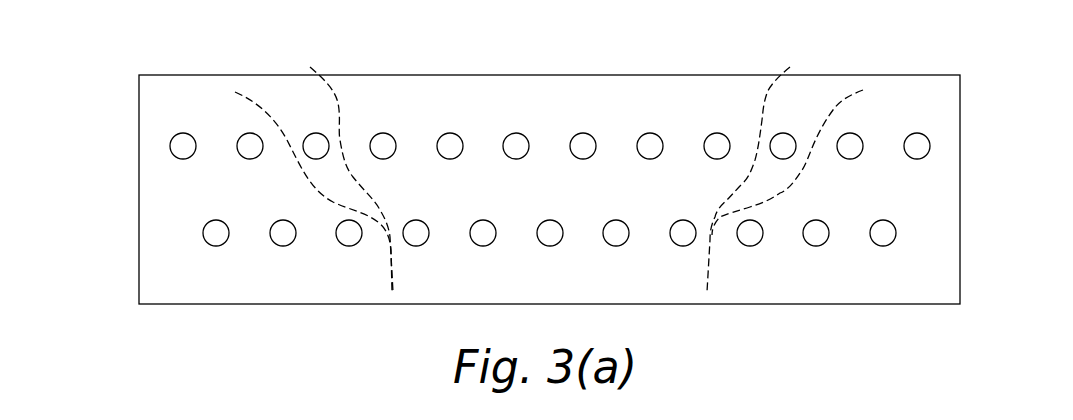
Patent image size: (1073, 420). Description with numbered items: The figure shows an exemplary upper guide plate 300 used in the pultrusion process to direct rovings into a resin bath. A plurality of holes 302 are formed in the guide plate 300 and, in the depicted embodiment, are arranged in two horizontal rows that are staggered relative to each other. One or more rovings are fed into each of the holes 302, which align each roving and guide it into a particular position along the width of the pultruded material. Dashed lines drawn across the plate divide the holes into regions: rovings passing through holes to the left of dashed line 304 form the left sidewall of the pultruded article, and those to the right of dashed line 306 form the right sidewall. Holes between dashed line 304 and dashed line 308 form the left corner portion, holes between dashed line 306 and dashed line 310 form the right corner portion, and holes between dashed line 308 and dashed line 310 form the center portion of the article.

The upper guide plate 300 is at (964, 73).
The holes 302 is at (207, 223).
The dashed line 304 is at (243, 92).
The dashed line 306 is at (856, 92).
The dashed line 308 is at (337, 102).
The dashed line 310 is at (763, 102).